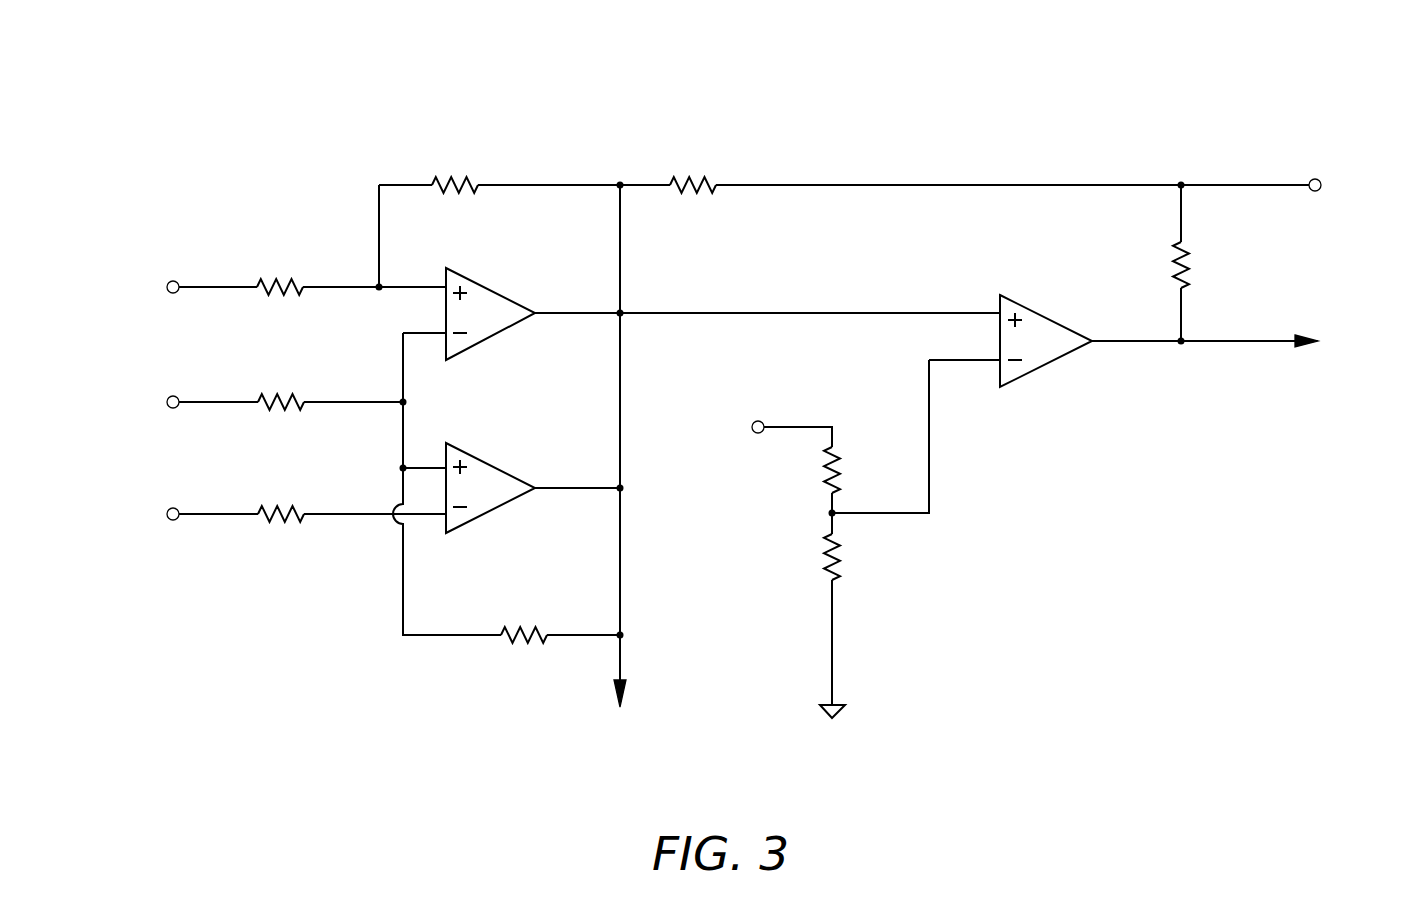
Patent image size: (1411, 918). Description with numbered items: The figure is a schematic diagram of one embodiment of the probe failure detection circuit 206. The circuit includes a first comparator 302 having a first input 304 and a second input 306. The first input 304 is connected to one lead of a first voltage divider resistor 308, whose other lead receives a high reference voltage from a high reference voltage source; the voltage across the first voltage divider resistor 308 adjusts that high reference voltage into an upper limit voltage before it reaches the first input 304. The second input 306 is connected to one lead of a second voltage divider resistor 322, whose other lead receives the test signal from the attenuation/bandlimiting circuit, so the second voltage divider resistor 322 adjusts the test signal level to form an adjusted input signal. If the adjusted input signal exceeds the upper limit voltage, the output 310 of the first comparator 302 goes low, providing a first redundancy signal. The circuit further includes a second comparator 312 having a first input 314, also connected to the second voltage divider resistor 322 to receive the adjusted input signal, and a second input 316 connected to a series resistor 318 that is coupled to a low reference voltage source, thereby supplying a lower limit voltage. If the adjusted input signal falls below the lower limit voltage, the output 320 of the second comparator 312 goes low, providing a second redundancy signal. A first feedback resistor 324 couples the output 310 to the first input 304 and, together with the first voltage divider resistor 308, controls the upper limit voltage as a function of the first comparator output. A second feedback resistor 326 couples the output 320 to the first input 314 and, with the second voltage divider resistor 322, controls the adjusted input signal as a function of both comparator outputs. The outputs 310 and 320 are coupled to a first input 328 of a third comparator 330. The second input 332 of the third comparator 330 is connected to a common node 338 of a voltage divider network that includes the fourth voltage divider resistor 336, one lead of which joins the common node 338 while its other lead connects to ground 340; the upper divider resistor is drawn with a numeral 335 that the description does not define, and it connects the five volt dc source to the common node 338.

The probe failure detection circuit 206 is at (972, 116).
The first comparator 302 is at (492, 284).
The first input 304 is at (429, 281).
The second input 306 is at (433, 351).
The first voltage divider resistor 308 is at (283, 308).
The output 310 is at (624, 307).
The second comparator 312 is at (489, 458).
The first input 314 is at (434, 455).
The second input 316 is at (434, 531).
The series resistor 318 is at (277, 541).
The output 320 is at (626, 489).
The second voltage divider resistor 322 is at (289, 425).
The first feedback resistor 324 is at (471, 160).
The second feedback resistor 326 is at (517, 657).
The first input 328 is at (985, 304).
The third comparator 330 is at (1058, 361).
The second input 332 is at (985, 373).
The 100K voltage divider resistor 335 is at (794, 467).
The fourth voltage divider resistor 336 is at (856, 568).
The common node 338 is at (836, 516).
The ground 340 is at (841, 714).